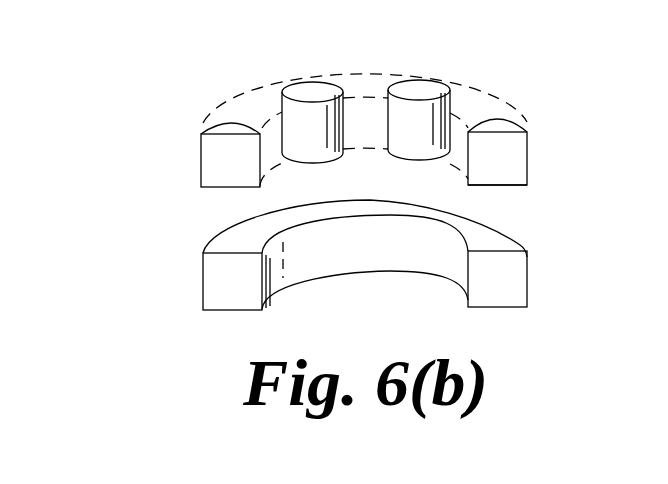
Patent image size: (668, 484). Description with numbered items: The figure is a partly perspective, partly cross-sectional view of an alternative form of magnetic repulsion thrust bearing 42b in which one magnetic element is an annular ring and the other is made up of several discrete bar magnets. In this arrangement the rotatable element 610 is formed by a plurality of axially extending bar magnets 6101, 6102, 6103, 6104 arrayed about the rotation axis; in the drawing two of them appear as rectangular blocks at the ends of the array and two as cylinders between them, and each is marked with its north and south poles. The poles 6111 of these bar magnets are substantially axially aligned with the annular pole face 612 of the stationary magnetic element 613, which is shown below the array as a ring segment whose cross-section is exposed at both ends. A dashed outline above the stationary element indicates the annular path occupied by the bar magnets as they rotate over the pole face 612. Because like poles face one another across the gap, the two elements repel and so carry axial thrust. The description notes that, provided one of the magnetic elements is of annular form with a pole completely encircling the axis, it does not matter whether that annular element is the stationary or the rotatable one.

The rotatable element 610 is at (537, 132).
The bar magnet 6101 is at (512, 155).
The bar magnet 6102 is at (422, 90).
The bar magnet 6103 is at (307, 93).
The bar magnet 6104 is at (201, 160).
The pole 6111 is at (510, 186).
The annular pole face 612 is at (502, 242).
The stationary magnetic element 613 is at (513, 292).
The magnetic repulsion thrust bearing 42b is at (358, 259).